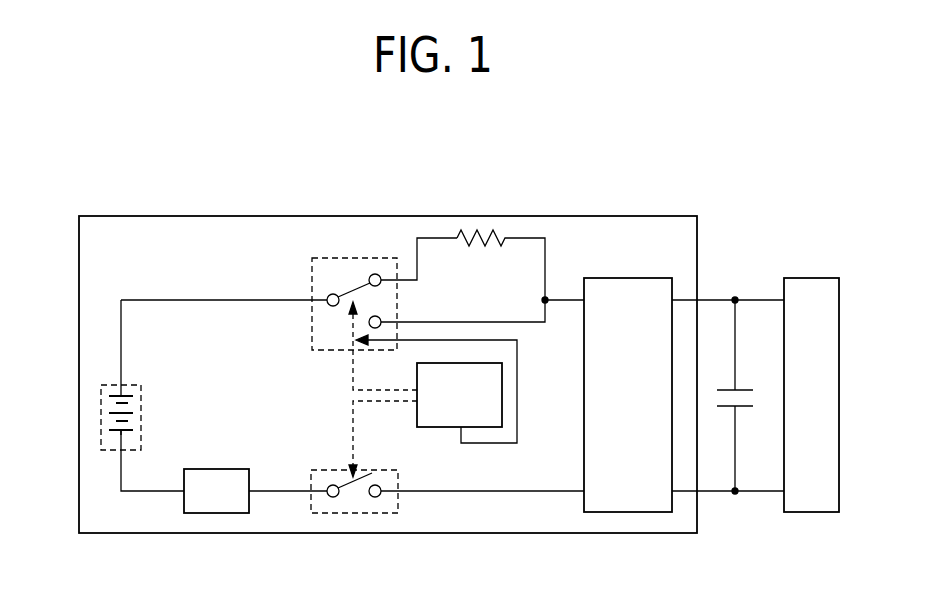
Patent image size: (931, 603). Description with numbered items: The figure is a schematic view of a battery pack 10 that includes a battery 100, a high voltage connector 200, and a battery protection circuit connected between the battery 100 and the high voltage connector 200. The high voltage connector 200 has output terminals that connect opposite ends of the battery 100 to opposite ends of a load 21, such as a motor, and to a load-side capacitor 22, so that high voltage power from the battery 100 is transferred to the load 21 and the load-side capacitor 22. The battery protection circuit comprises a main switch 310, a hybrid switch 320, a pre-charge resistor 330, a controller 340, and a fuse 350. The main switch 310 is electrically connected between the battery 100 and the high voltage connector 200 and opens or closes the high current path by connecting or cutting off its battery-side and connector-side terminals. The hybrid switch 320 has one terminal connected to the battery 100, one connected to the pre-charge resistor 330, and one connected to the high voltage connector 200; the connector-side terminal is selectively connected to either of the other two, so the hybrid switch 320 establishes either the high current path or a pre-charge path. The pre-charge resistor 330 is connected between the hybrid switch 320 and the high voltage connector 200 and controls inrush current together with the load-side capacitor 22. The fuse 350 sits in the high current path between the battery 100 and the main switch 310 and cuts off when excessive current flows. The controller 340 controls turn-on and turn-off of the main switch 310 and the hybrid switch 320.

The battery pack 10 is at (635, 216).
The load 21 is at (810, 278).
The load-side capacitor 22 is at (745, 408).
The battery 100 is at (100, 407).
The high voltage connector 200 is at (627, 513).
The main switch 310 is at (355, 514).
The hybrid switch 320 is at (357, 257).
The pre-charge resistor 330 is at (483, 232).
The controller 340 is at (436, 428).
The fuse 350 is at (216, 514).